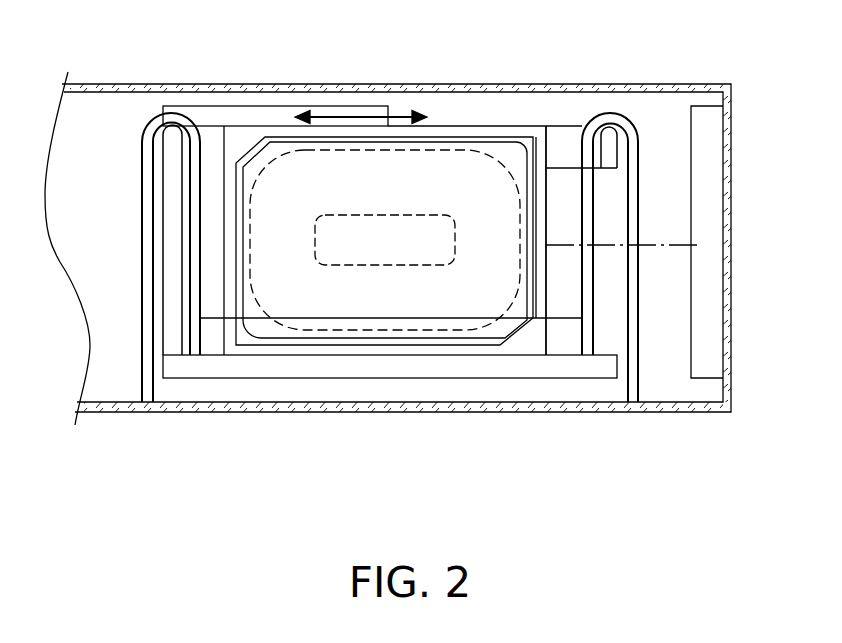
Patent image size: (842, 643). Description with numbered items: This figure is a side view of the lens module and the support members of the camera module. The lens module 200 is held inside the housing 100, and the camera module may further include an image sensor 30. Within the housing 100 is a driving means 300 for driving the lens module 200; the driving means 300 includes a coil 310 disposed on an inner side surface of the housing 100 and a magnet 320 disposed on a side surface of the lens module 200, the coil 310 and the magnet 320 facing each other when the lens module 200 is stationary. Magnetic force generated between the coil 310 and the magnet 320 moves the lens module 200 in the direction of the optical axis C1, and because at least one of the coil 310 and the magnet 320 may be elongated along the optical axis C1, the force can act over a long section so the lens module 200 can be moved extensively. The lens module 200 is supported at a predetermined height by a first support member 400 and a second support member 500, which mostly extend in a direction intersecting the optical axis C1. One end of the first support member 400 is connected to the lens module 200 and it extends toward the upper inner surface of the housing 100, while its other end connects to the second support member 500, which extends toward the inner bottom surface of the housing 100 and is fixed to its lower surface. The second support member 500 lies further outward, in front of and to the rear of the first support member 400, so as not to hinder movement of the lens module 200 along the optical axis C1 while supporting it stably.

The housing 100 is at (503, 82).
The image sensor 30 is at (708, 122).
The lens module 200 is at (453, 123).
The driving means 300 is at (386, 332).
The coil 310 is at (432, 332).
The magnet 320 is at (492, 328).
The first support member 400 is at (588, 322).
The second support member 500 is at (632, 328).
The optical axis C1 is at (734, 220).